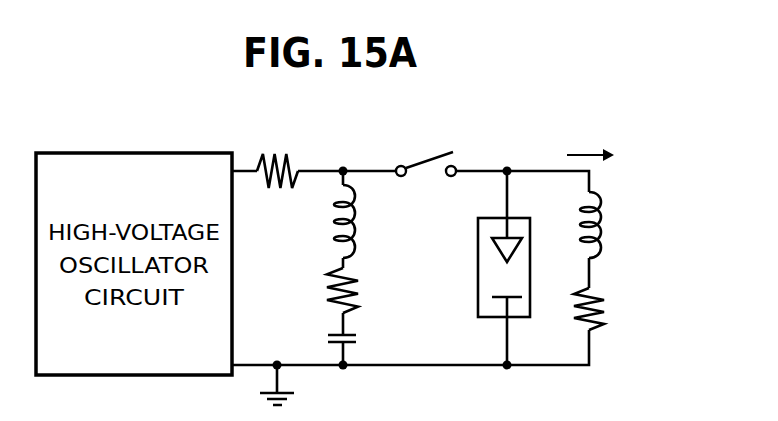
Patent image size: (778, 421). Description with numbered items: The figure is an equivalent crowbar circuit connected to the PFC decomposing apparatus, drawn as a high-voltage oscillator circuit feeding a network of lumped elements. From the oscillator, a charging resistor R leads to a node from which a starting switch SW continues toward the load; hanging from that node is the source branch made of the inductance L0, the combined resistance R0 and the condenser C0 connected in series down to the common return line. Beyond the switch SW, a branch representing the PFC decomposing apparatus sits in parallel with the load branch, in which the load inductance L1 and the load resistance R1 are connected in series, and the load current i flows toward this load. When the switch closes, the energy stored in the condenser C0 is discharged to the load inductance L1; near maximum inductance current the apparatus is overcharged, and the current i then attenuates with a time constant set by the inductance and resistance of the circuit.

The charging resistor R is at (277, 155).
The starting switch SW is at (426, 150).
The inductance L0 is at (362, 221).
The combined resistance R0 is at (359, 290).
The condenser C0 is at (360, 339).
The load inductance L1 is at (609, 225).
The load resistance R1 is at (606, 309).
The load current i is at (598, 152).